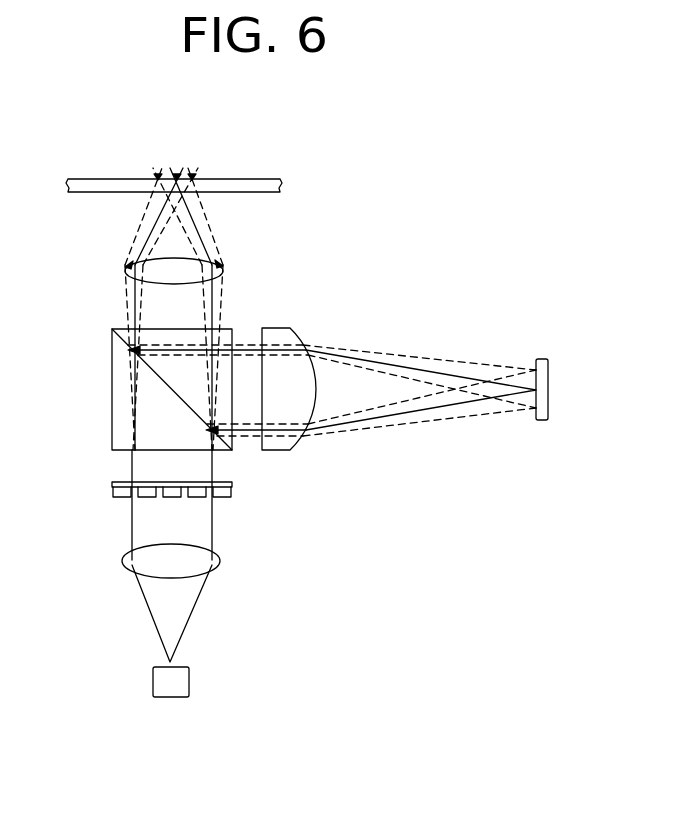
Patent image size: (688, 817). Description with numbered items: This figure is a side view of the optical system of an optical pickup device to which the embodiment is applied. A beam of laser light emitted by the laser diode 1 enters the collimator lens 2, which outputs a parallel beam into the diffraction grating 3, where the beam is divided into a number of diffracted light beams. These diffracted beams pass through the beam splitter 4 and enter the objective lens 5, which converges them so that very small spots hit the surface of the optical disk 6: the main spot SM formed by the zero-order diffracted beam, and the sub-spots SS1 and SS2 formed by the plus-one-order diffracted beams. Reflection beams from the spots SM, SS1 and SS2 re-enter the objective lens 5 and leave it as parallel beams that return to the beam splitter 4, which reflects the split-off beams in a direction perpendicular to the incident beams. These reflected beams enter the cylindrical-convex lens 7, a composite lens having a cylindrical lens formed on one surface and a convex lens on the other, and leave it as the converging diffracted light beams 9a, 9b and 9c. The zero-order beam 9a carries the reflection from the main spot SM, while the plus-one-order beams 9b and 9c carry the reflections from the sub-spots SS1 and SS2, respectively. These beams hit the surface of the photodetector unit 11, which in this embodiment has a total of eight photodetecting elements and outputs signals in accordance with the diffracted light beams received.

The laser diode 1 is at (152, 692).
The collimator lens 2 is at (122, 562).
The diffraction grating 3 is at (112, 490).
The beam splitter 4 is at (112, 393).
The objective lens 5 is at (125, 269).
The optical disk 6 is at (85, 186).
The cylindrical-convex lens 7 is at (280, 327).
The 0-order diffracted light beam 9a is at (485, 380).
The +1-order diffracted light beam 9b is at (440, 362).
The +1-order diffracted light beam 9c is at (462, 417).
The photodetector unit 11 is at (540, 422).
The sub-spot SS1 is at (191, 180).
The sub-spot SS2 is at (158, 180).
The main spot SM is at (176, 180).